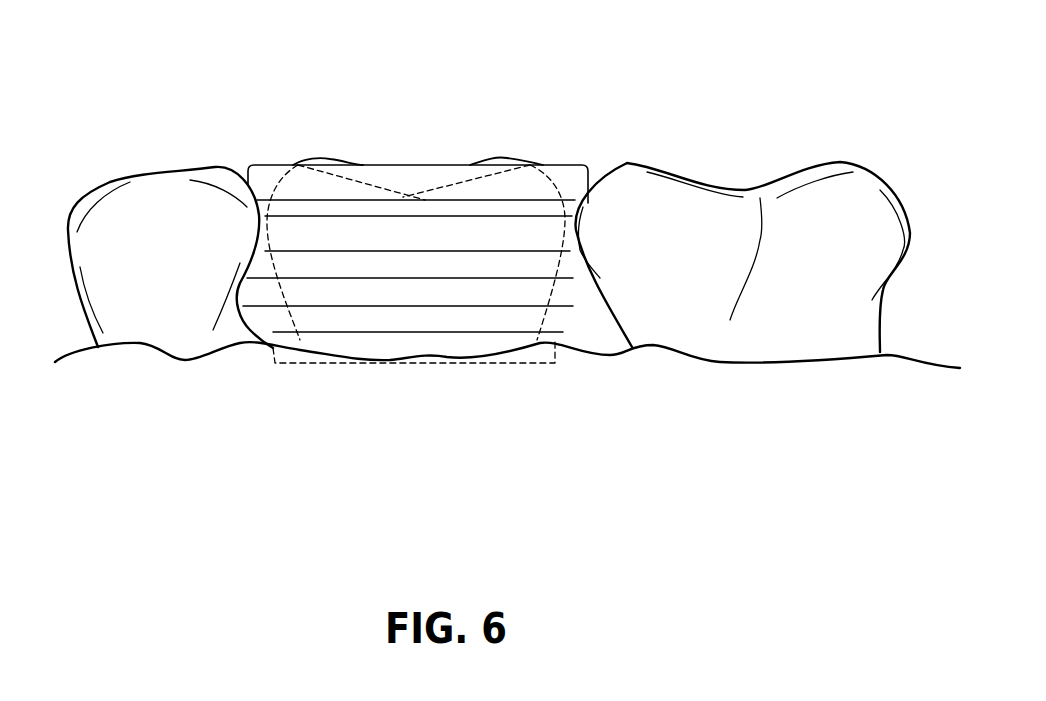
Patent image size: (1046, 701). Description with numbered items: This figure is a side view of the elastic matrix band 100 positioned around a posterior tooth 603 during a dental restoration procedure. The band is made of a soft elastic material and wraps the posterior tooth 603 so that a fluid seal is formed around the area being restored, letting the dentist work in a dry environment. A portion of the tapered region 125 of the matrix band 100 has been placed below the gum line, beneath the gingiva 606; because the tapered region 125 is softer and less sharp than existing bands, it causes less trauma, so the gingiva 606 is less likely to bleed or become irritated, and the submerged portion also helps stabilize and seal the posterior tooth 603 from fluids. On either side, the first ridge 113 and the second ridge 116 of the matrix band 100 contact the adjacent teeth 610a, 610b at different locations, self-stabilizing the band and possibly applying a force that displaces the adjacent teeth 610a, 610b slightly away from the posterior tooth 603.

The matrix band 100 is at (399, 202).
The first ridge 113 is at (249, 172).
The second ridge 116 is at (232, 297).
The tapered region 125 is at (258, 355).
The posterior tooth 603 is at (512, 163).
The gingiva 606 is at (601, 390).
The adjacent tooth 610a is at (110, 178).
The adjacent tooth 610b is at (881, 180).